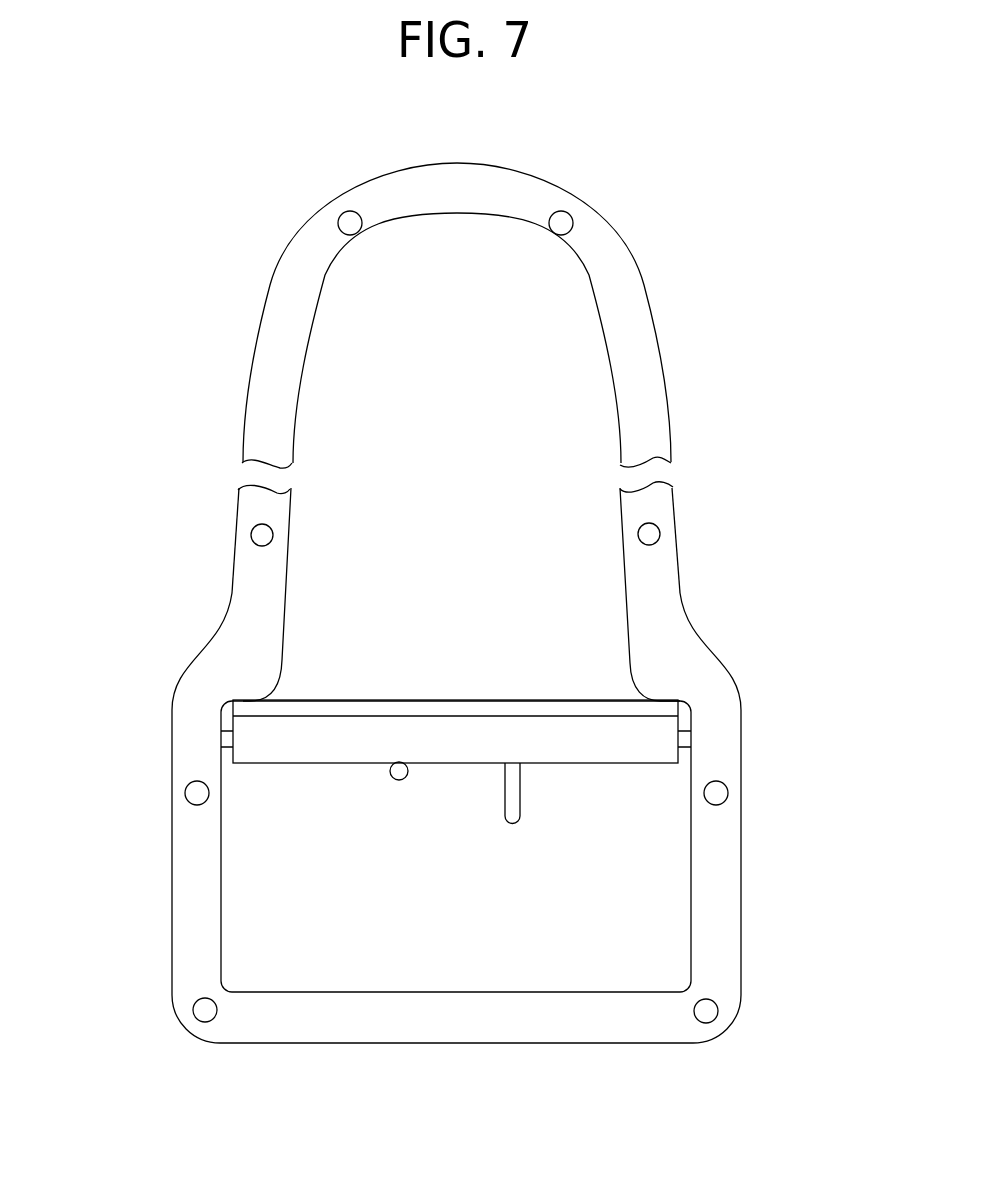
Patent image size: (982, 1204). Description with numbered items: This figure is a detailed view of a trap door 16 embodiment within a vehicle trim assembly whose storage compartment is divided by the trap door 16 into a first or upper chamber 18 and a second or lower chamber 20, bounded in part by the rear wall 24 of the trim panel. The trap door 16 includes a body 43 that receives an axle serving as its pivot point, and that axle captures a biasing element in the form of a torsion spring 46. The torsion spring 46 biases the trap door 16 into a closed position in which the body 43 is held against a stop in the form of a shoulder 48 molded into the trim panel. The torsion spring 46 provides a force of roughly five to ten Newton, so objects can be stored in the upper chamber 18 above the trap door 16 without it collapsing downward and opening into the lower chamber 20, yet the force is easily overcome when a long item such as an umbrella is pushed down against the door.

The trap door 16 is at (548, 668).
The first or upper chamber 18 is at (548, 413).
The second or lower chamber 20 is at (267, 892).
The rear wall 24 is at (248, 612).
The body 43 is at (587, 738).
The torsion spring 46 is at (518, 803).
The shoulder 48 is at (218, 707).